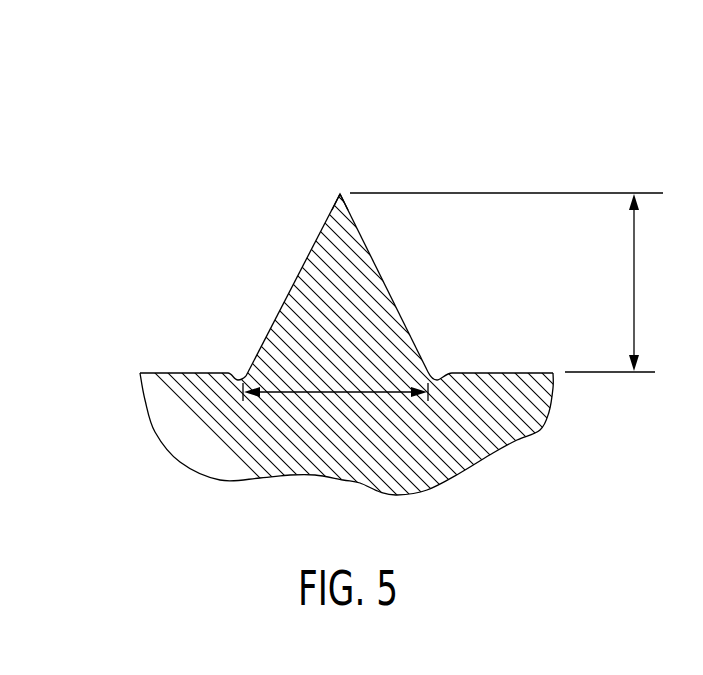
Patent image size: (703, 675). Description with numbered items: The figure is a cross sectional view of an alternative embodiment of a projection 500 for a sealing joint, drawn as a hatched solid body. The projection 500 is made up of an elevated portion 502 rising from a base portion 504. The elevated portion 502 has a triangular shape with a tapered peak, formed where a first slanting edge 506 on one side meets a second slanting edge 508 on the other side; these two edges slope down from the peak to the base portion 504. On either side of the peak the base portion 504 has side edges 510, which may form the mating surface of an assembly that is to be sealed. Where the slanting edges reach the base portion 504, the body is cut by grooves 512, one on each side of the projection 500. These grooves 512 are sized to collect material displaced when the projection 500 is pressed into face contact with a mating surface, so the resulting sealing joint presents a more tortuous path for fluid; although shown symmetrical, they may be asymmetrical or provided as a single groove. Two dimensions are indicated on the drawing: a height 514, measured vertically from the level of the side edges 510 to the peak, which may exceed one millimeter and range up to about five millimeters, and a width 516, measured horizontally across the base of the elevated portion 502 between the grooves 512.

The projection 500 is at (108, 108).
The elevated portion 502 is at (339, 194).
The base portion 504 is at (513, 432).
The first slanting edge 506 is at (297, 277).
The second slanting edge 508 is at (390, 295).
The side edges 510 is at (505, 372).
The grooves 512 is at (233, 378).
The height 514 is at (634, 268).
The width 516 is at (315, 395).